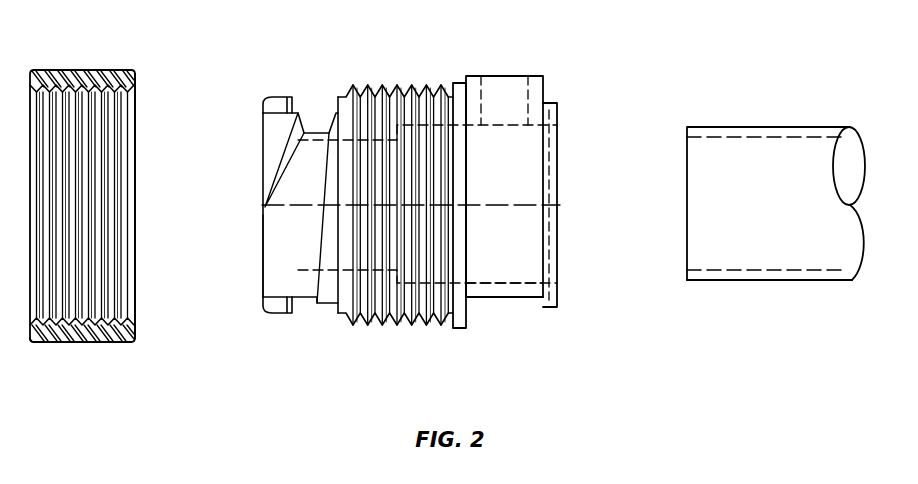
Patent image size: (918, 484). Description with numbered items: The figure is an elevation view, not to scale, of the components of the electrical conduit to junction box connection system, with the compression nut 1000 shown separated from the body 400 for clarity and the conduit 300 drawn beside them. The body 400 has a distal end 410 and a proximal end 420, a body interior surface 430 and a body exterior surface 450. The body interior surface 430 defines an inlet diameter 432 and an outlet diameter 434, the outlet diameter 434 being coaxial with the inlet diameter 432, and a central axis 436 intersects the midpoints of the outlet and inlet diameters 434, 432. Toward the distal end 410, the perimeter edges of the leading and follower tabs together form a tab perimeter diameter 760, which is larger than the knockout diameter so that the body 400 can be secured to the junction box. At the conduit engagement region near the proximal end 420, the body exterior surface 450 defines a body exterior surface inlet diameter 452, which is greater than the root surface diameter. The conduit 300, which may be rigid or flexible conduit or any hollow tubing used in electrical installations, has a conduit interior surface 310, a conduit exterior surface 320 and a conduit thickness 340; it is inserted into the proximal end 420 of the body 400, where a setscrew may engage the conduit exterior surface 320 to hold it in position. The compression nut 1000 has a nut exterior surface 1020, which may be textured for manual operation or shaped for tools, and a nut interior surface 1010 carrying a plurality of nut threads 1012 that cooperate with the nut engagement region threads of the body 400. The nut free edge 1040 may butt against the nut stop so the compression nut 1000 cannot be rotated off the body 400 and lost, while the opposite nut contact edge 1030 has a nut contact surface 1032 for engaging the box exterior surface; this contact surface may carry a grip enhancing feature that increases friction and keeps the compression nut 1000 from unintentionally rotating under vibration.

The compression nut 1000 is at (100, 70).
The nut contact surface 1032 is at (28, 80).
The nut interior surface 1010 is at (137, 100).
The nut threads 1012 is at (120, 308).
The nut free edge 1040 is at (137, 337).
The nut exterior surface 1020 is at (87, 343).
The nut contact edge 1030 is at (26, 345).
The distal end 410 is at (265, 115).
The central axis 436 is at (262, 217).
The outlet diameter 434 is at (338, 205).
The tab perimeter diameter 760 is at (182, 97).
The body 400 is at (543, 77).
The proximal end 420 is at (557, 118).
The body interior surface 430 is at (486, 284).
The body exterior surface 450 is at (497, 298).
The inlet diameter 432 is at (583, 125).
The body exterior surface inlet diameter 452 is at (631, 103).
The conduit 300 is at (770, 127).
The conduit interior surface 310 is at (757, 270).
The conduit exterior surface 320 is at (735, 282).
The conduit thickness 340 is at (663, 272).